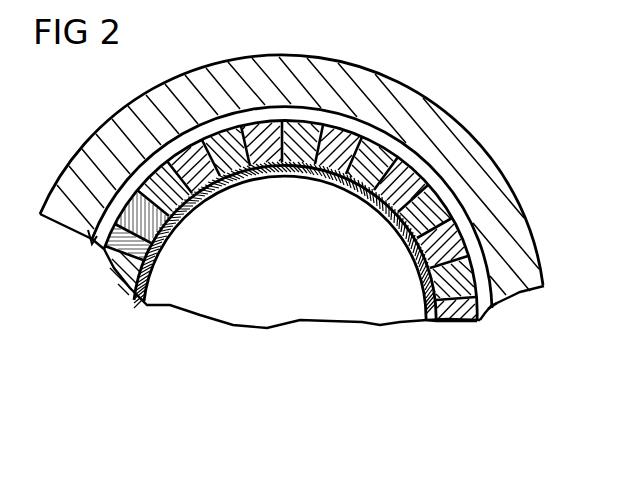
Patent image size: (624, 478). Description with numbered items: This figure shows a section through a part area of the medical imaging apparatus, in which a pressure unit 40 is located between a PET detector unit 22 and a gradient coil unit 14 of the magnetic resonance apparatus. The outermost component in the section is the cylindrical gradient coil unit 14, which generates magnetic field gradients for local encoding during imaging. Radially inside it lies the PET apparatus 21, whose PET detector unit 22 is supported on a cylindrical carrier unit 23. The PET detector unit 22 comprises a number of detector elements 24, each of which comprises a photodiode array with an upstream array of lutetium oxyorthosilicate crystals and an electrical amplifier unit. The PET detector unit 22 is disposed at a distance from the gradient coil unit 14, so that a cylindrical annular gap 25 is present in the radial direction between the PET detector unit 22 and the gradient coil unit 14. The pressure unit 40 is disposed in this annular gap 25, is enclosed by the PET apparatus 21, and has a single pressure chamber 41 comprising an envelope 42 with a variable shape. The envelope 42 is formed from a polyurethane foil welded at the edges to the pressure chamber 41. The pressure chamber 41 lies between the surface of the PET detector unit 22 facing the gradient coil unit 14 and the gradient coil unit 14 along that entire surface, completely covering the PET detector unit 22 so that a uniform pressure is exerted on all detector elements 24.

The gradient coil unit 14 is at (441, 126).
The pressure chamber 41 is at (223, 120).
The pressure unit 40 is at (76, 249).
The envelope 42 is at (92, 232).
The detector elements 24 is at (340, 147).
The carrier unit 23 is at (422, 264).
The PET apparatus 21 is at (429, 346).
The PET detector unit 22 is at (455, 344).
The annular gap 25 is at (483, 303).